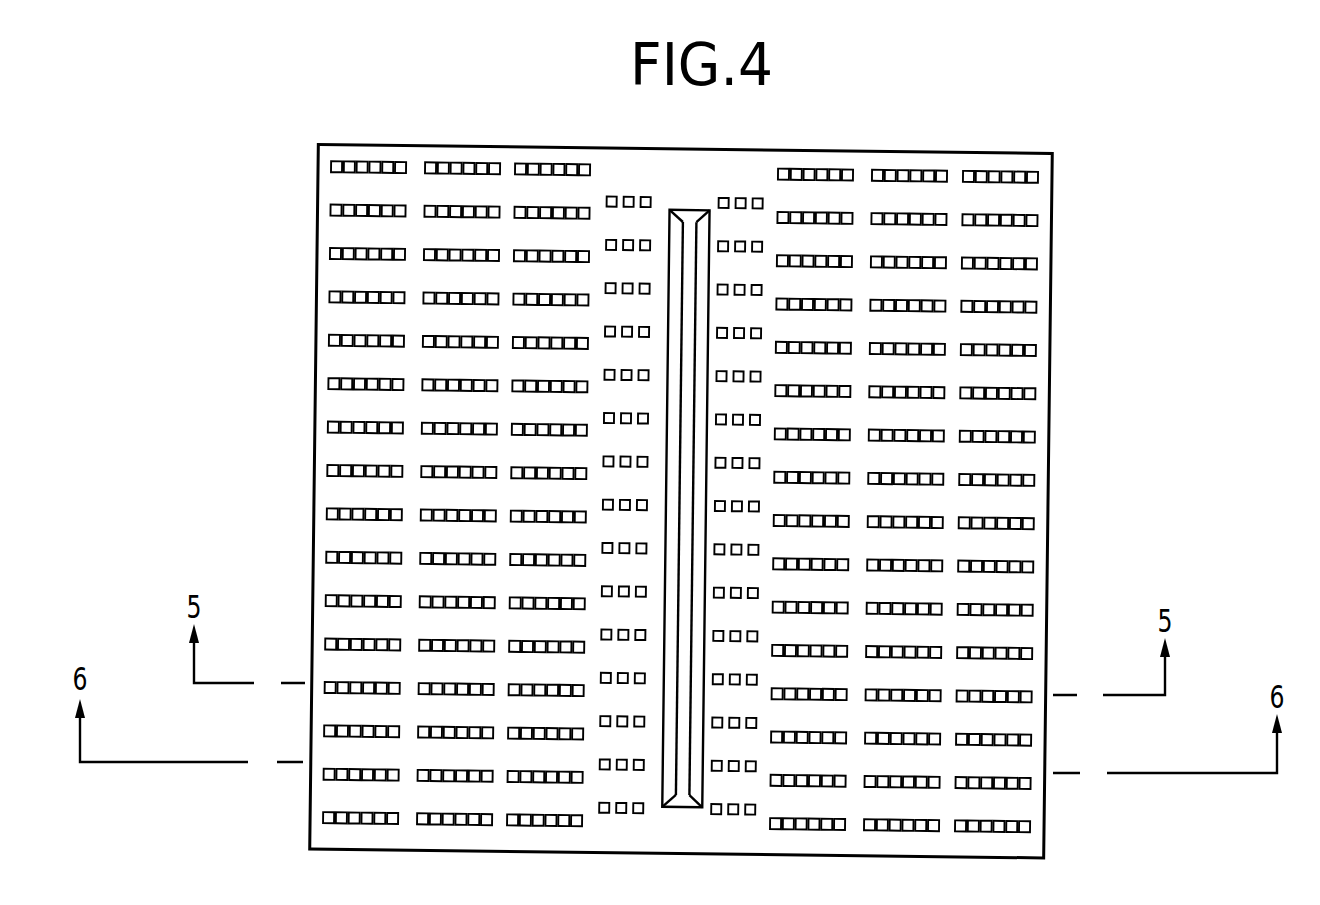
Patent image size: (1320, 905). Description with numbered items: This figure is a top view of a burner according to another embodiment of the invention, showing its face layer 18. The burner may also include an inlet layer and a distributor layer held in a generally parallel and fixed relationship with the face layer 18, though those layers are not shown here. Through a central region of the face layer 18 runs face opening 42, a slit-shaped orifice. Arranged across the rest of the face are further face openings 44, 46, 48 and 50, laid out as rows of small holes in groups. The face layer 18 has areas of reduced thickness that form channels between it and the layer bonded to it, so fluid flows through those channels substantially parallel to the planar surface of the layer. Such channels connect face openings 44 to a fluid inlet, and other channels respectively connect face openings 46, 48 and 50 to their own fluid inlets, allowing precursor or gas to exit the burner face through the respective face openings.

The face layer 18 is at (1055, 192).
The face opening 42 is at (690, 228).
The face openings 44 is at (643, 813).
The face openings 46 is at (521, 825).
The face openings 48 is at (431, 825).
The face openings 50 is at (336, 825).